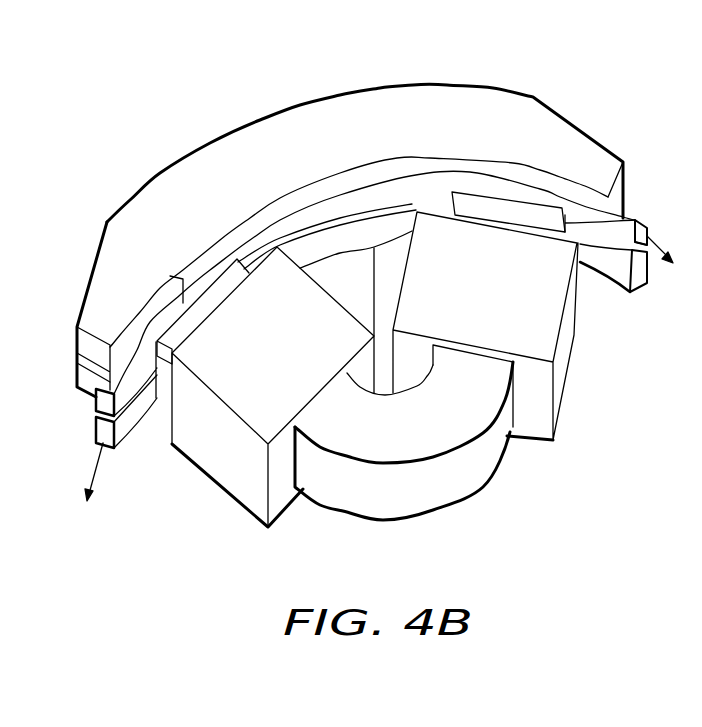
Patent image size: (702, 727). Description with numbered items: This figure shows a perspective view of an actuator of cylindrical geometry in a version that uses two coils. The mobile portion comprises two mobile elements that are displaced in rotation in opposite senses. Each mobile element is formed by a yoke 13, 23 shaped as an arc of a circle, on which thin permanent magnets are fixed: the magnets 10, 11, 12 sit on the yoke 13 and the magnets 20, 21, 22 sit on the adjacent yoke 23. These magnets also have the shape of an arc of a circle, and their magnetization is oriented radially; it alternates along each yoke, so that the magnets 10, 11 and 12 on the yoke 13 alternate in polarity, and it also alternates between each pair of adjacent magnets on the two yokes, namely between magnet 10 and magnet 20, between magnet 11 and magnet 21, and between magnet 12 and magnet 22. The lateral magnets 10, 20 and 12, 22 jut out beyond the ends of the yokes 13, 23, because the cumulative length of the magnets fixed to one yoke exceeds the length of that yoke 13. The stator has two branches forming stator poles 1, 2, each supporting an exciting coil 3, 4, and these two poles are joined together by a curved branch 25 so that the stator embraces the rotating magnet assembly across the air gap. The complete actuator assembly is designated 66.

The rotor assembly 66 is at (570, 84).
The yoke 13 is at (458, 95).
The magnet 11 is at (410, 177).
The magnet 10 is at (133, 343).
The magnet 12 is at (632, 218).
The magnet 20 is at (120, 437).
The magnet 22 is at (623, 288).
The yoke 23 is at (83, 390).
The stator pole 1 is at (203, 300).
The stator pole 2 is at (517, 208).
The exciting coil 3 is at (283, 393).
The exciting coil 4 is at (560, 363).
The magnet 21 is at (368, 250).
The curved branch 25 is at (440, 446).